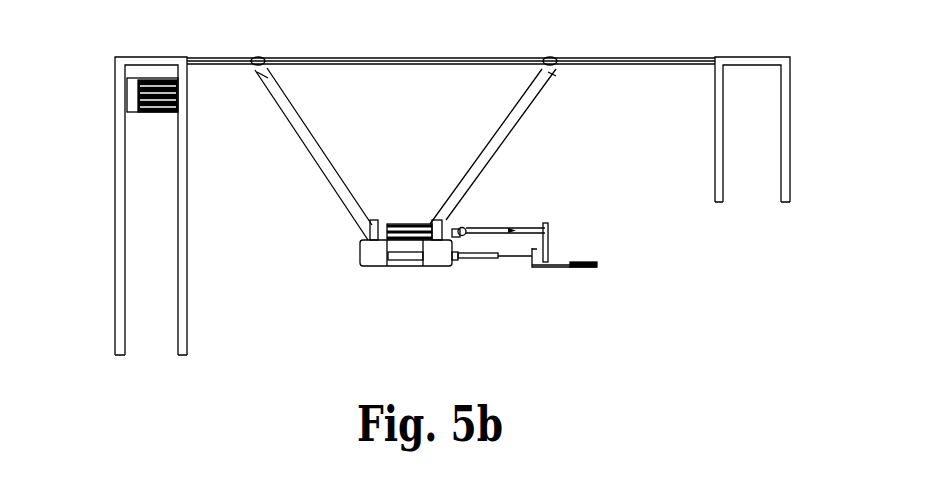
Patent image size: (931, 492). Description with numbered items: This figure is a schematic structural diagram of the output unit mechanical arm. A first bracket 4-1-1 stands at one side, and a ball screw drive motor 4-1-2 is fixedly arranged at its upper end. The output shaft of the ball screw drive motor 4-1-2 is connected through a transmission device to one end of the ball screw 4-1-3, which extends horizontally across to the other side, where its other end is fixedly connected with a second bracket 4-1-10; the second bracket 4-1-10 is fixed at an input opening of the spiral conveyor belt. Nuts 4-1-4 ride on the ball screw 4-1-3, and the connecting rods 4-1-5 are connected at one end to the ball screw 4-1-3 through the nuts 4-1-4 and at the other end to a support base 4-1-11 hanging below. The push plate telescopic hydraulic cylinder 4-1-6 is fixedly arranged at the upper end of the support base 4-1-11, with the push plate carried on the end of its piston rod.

The first bracket 4-1-1 is at (120, 62).
The ball screw drive motor 4-1-2 is at (164, 72).
The ball screw 4-1-3 is at (219, 62).
The nut 4-1-4 is at (269, 62).
The connecting rod 4-1-5 is at (328, 156).
The push plate telescopic hydraulic cylinder 4-1-6 is at (428, 223).
The second bracket 4-1-10 is at (817, 38).
The support base 4-1-11 is at (367, 263).